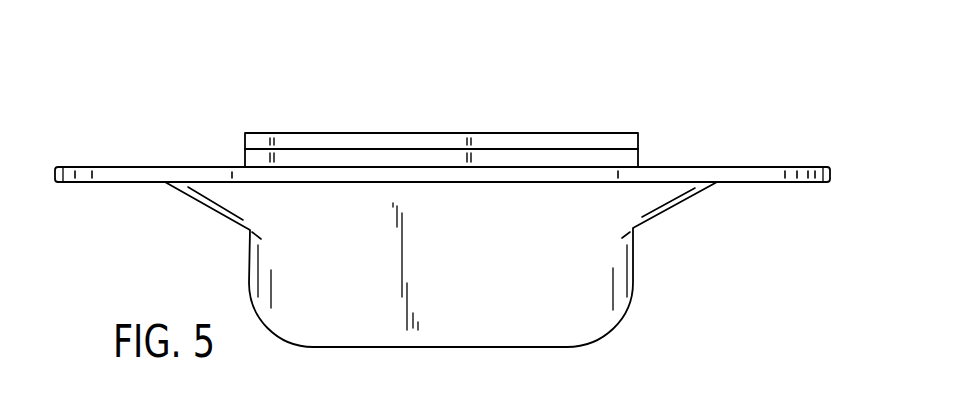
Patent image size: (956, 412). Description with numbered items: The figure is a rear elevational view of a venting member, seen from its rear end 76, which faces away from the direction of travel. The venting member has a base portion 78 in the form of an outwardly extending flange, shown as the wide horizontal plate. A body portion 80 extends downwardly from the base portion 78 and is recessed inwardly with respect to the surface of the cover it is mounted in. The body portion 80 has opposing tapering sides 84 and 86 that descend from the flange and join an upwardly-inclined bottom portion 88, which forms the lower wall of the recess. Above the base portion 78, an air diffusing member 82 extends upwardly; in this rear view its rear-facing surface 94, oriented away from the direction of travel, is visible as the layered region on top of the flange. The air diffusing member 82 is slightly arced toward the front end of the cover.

The rear end 76 is at (442, 177).
The base portion 78 is at (730, 168).
The body portion 80 is at (441, 287).
The air diffusing member 82 is at (452, 120).
The tapering side 84 is at (247, 258).
The tapering side 86 is at (634, 245).
The bottom portion 88 is at (372, 262).
The rear-facing surface 94 is at (303, 141).